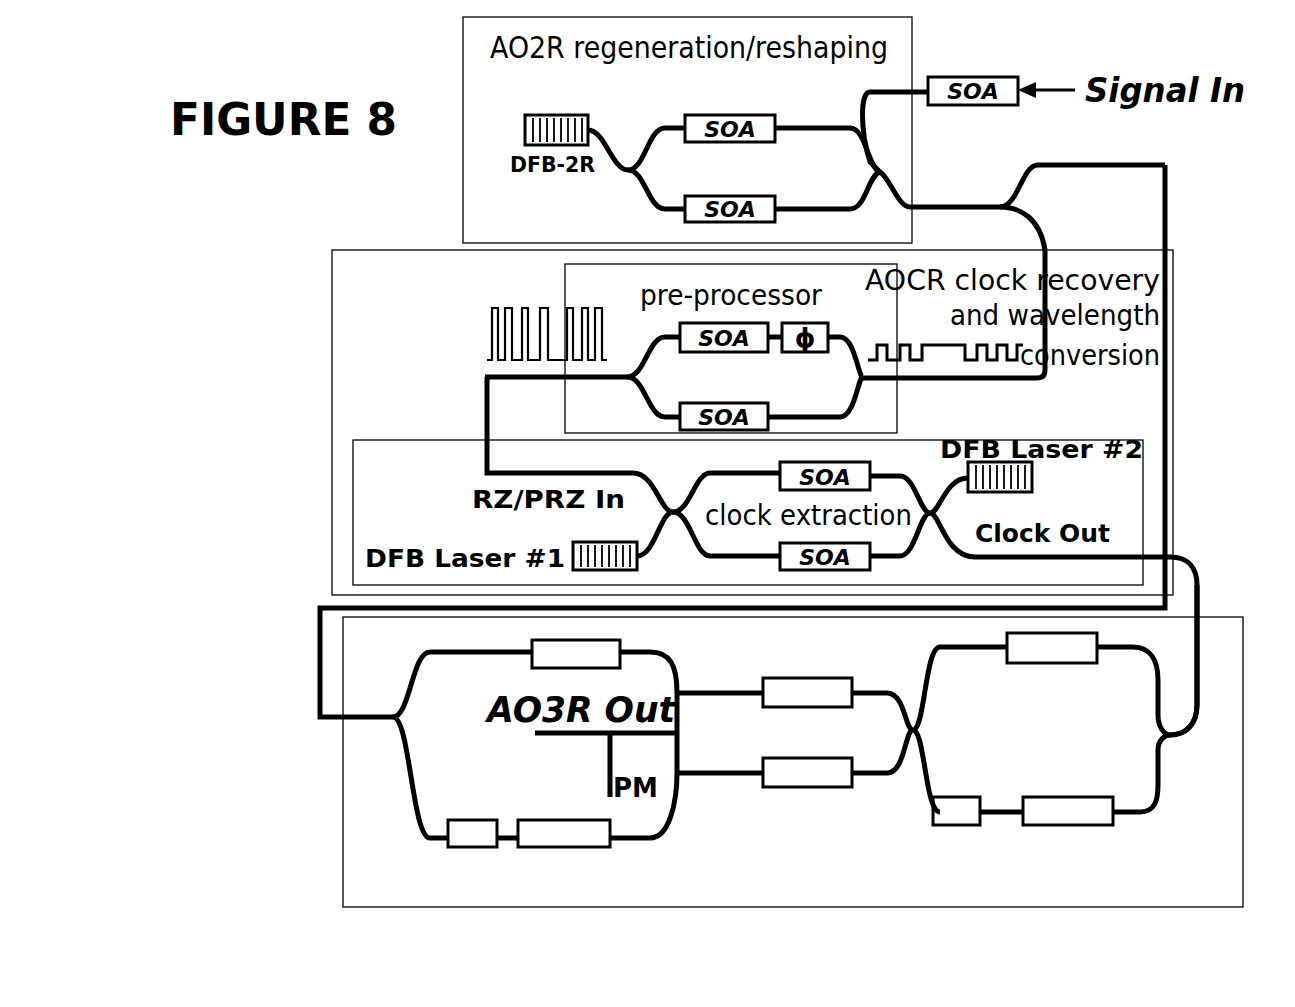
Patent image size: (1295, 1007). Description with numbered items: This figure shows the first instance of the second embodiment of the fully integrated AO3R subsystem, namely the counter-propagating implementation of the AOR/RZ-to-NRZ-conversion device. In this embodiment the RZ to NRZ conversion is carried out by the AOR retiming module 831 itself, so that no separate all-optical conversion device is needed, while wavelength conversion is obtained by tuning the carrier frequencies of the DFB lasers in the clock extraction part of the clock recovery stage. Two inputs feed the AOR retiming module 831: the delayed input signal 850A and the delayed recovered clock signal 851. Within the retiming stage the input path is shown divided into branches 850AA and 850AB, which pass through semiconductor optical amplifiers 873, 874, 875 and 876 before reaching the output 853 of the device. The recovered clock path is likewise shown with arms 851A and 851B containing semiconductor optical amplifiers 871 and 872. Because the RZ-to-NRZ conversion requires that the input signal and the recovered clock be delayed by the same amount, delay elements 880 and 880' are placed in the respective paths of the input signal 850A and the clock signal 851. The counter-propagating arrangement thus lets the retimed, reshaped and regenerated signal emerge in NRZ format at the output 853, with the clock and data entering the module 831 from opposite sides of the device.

The delayed input signal 850A is at (1121, 165).
The delayed recovered clock signal 851 is at (1200, 588).
The upper waveguide arm 850AA is at (515, 658).
The lower waveguide arm 850AB is at (410, 762).
The semiconductor optical amplifier 873 is at (568, 640).
The semiconductor optical amplifier 874 is at (553, 818).
The semiconductor optical amplifier 875 is at (787, 676).
The semiconductor optical amplifier 876 is at (800, 790).
The semiconductor optical amplifier 871 is at (1052, 664).
The semiconductor optical amplifier 872 is at (1068, 828).
The delay element 880 is at (471, 815).
The delay element 880' is at (924, 831).
The output port 853 is at (553, 735).
The upper clock waveguide arm 851A is at (1150, 672).
The lower clock waveguide arm 851B is at (1160, 778).
The AOR retiming module 831 is at (343, 806).